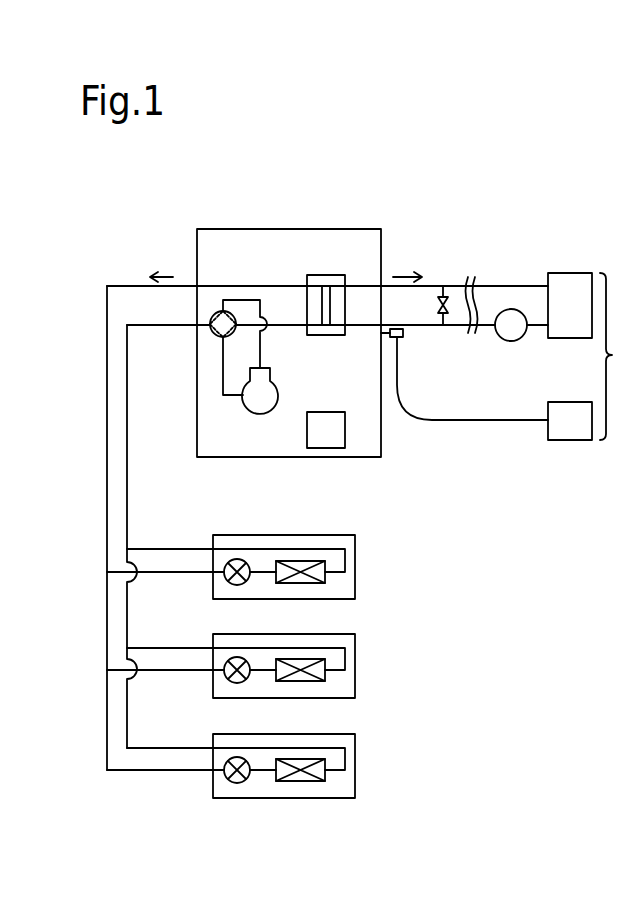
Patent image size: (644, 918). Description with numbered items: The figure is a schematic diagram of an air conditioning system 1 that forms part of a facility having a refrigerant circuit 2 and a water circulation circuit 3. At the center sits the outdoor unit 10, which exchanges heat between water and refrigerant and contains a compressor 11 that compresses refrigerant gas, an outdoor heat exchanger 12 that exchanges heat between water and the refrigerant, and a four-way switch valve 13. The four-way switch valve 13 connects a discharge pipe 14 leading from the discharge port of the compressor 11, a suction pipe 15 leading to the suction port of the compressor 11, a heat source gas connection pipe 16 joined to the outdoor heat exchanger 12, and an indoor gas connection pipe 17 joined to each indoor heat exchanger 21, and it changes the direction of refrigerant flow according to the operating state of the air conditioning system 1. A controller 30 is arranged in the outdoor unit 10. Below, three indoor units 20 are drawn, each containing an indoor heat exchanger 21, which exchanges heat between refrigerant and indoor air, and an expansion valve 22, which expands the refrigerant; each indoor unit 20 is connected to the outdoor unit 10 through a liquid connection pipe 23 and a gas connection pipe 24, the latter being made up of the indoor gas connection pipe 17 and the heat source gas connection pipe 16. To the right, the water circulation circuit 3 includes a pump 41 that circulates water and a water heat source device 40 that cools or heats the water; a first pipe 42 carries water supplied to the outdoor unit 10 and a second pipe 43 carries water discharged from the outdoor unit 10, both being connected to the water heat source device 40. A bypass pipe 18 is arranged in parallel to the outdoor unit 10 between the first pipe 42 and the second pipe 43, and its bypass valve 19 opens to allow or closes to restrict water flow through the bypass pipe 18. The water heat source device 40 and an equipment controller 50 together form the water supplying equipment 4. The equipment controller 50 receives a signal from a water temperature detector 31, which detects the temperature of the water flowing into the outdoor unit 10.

The air conditioning system 1 is at (310, 201).
The refrigerant circuit 2 is at (125, 254).
The water circulation circuit 3 is at (544, 254).
The water supplying equipment 4 is at (614, 356).
The outdoor unit 10 is at (362, 228).
The compressor 11 is at (262, 412).
The outdoor heat exchanger 12 is at (325, 275).
The four-way switch valve 13 is at (210, 333).
The discharge pipe 14 is at (261, 352).
The suction pipe 15 is at (223, 385).
The heat source gas connection pipe 16 is at (287, 320).
The indoor gas connection pipe 17 is at (145, 327).
The bypass pipe 18 is at (444, 294).
The bypass valve 19 is at (435, 306).
The indoor unit 20 is at (356, 585).
The indoor heat exchanger 21 is at (300, 583).
The expansion valve 22 is at (225, 578).
The liquid connection pipe 23 is at (105, 482).
The gas connection pipe 24 is at (128, 482).
The controller 30 is at (325, 448).
The water temperature detector 31 is at (381, 337).
The water heat source device 40 is at (570, 338).
The pump 41 is at (512, 341).
The first pipe 42 is at (480, 326).
The second pipe 43 is at (495, 286).
The equipment controller 50 is at (570, 440).